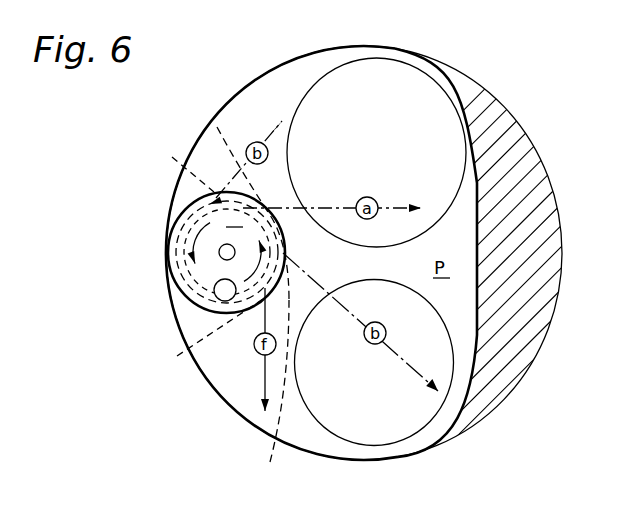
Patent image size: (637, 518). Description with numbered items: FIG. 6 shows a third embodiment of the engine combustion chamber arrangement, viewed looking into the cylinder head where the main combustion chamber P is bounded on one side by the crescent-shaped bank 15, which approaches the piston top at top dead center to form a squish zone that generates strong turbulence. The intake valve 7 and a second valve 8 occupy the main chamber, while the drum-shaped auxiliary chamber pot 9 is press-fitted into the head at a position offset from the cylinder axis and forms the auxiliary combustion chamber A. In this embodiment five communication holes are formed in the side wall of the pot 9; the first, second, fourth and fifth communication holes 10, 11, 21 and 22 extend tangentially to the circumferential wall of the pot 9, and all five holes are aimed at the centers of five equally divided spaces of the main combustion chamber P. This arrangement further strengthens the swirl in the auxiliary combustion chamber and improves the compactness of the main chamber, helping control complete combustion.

The intake valve 7 is at (418, 98).
The second cylinder 8 is at (400, 423).
The auxiliary chamber pot 9 is at (180, 267).
The communication hole 10 is at (217, 127).
The communication hole 11 is at (281, 391).
The crescent-shaped bank 15 is at (528, 191).
The communication hole 21 is at (179, 166).
The communication hole 22 is at (206, 337).